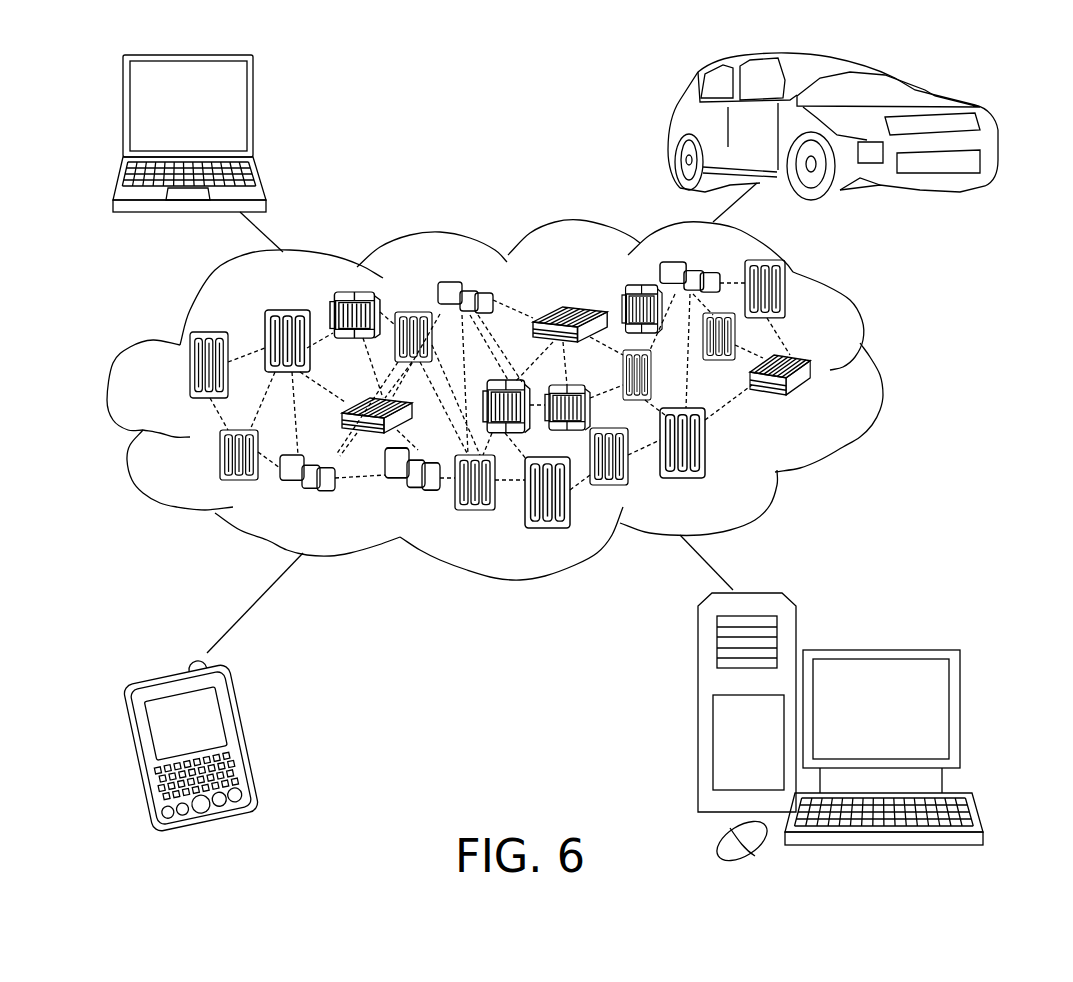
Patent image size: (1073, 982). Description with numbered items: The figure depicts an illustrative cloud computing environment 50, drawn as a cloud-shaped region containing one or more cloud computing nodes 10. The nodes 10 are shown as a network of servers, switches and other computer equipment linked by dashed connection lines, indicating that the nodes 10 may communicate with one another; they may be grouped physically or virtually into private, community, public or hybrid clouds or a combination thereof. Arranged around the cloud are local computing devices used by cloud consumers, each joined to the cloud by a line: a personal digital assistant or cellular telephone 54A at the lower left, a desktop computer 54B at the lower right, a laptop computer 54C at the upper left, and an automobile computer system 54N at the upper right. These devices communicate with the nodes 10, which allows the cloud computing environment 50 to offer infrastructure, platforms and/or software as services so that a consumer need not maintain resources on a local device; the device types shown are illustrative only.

The cloud computing nodes 10 is at (823, 400).
The cloud computing environment 50 is at (880, 368).
The personal digital assistant or cellular telephone 54A is at (248, 740).
The desktop computer 54B is at (880, 648).
The laptop computer 54C is at (255, 113).
The automobile computer system 54N is at (670, 130).